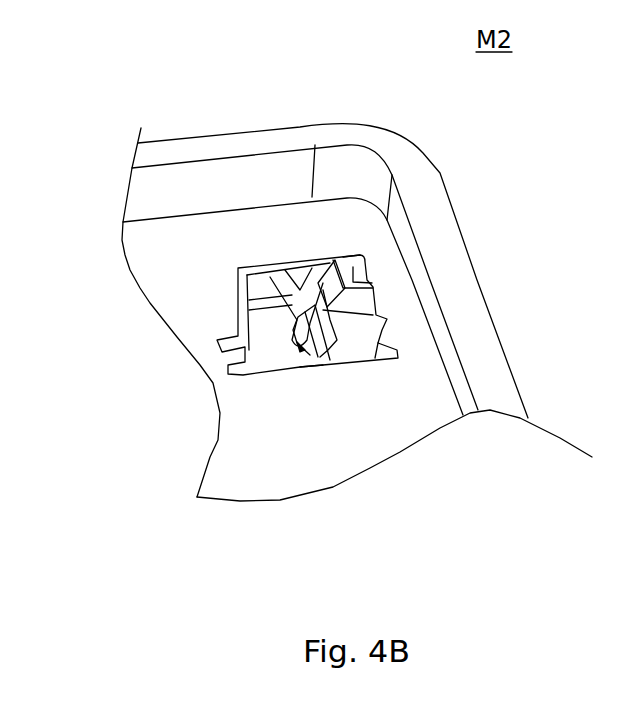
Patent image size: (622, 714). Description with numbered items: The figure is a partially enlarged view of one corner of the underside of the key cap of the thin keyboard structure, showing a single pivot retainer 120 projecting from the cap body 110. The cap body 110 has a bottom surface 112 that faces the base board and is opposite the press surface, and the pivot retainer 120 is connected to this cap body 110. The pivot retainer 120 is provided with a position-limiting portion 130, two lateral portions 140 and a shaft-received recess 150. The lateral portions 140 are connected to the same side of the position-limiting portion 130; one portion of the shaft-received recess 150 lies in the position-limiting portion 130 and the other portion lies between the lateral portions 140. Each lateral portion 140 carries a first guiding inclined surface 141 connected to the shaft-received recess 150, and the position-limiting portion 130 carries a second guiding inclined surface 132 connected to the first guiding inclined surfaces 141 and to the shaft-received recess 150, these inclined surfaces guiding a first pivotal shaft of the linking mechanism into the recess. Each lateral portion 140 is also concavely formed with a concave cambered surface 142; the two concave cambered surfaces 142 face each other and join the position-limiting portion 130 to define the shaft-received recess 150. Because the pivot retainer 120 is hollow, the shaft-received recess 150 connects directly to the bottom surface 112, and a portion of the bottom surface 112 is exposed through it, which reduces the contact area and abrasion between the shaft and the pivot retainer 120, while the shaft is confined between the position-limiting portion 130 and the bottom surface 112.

The cap body 110 is at (415, 167).
The bottom surface 112 is at (218, 223).
The pivot retainer 120 is at (80, 265).
The position-limiting portion 130 is at (238, 266).
The second guiding inclined surface 132 is at (293, 277).
The lateral portion 140 is at (323, 296).
The first guiding inclined surface 141 is at (343, 257).
The concave cambered surface 142 is at (323, 353).
The shaft-received recess 150 is at (262, 327).